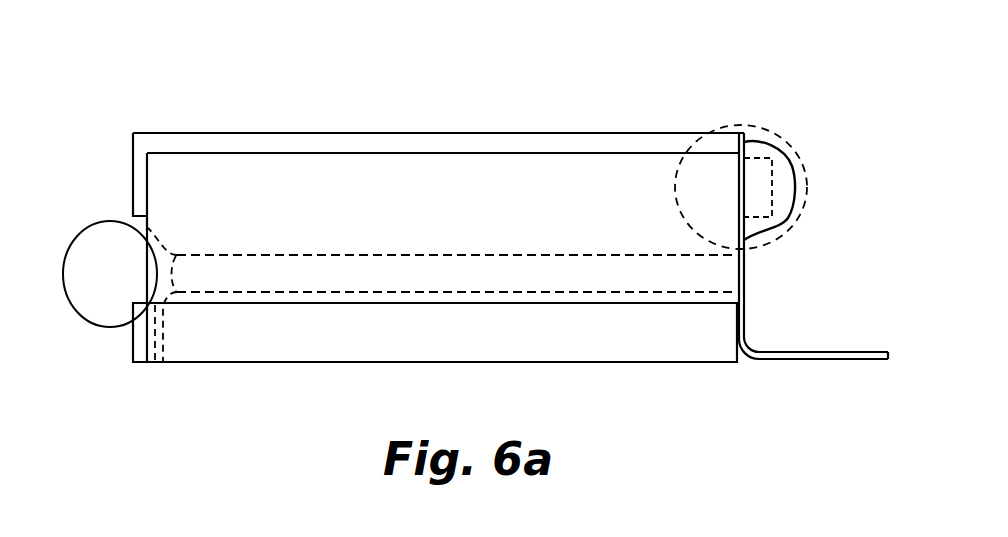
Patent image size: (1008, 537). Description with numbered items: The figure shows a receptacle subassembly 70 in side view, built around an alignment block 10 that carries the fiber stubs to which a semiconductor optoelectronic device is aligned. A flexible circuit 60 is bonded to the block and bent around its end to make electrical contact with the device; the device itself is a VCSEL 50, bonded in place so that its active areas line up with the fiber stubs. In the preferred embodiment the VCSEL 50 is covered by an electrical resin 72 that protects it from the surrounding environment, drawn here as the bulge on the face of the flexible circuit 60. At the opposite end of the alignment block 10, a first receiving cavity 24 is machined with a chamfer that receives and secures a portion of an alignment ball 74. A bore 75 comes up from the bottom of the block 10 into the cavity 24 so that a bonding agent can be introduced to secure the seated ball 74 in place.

The alignment block 10 is at (603, 368).
The first receiving cavity 24 is at (150, 262).
The VCSEL 50 is at (797, 213).
The flexible circuit 60 is at (817, 340).
The receptacle subassembly 70 is at (570, 58).
The electrical resin 72 is at (756, 148).
The alignment ball 74 is at (66, 298).
The bore 75 is at (165, 342).